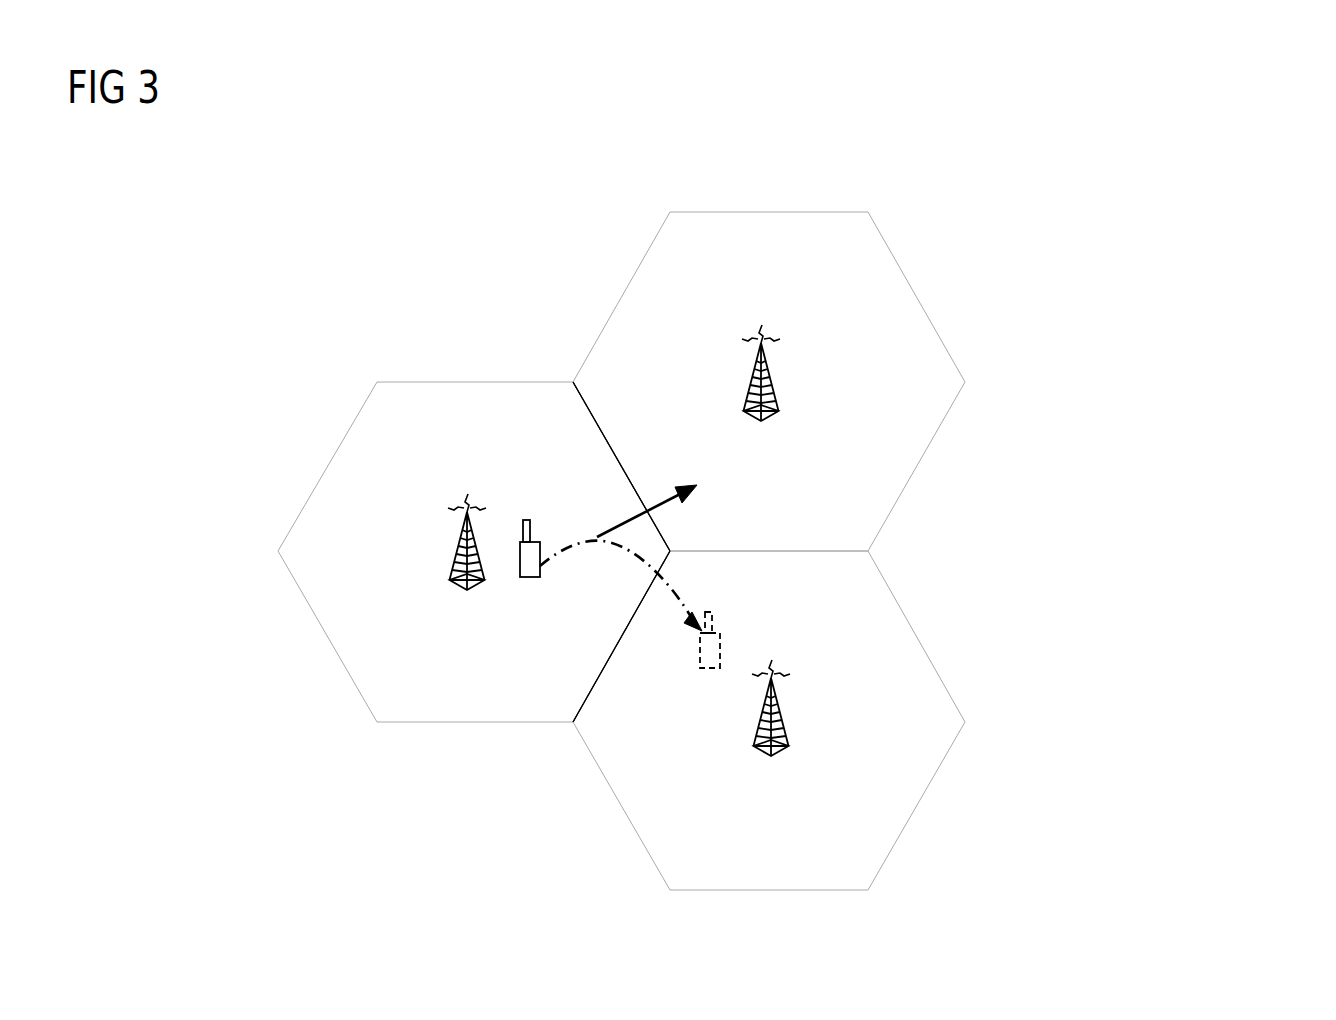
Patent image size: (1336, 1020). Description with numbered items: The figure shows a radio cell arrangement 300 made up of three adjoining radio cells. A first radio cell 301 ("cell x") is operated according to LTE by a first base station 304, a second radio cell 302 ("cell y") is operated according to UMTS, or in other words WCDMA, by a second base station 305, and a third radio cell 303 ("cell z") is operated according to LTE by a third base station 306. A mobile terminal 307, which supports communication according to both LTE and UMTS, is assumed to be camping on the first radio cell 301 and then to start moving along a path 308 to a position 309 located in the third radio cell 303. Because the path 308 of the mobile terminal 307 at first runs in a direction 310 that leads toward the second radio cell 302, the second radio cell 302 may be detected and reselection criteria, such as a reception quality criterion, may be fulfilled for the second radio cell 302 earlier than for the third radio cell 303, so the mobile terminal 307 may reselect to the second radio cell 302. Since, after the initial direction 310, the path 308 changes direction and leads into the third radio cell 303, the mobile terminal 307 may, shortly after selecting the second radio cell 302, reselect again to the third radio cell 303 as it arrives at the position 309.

The radio cell arrangement 300 is at (1237, 170).
The first radio cell 301 is at (397, 380).
The second radio cell 302 is at (766, 212).
The third radio cell 303 is at (918, 642).
The first base station 304 is at (457, 545).
The second base station 305 is at (770, 376).
The third base station 306 is at (780, 700).
The mobile terminal 307 is at (541, 547).
The path 308 is at (614, 553).
The position 309 is at (722, 642).
The direction 310 is at (668, 498).